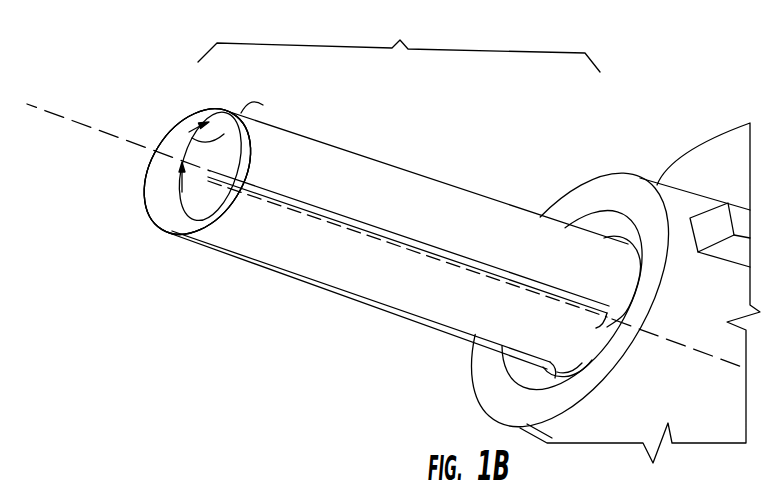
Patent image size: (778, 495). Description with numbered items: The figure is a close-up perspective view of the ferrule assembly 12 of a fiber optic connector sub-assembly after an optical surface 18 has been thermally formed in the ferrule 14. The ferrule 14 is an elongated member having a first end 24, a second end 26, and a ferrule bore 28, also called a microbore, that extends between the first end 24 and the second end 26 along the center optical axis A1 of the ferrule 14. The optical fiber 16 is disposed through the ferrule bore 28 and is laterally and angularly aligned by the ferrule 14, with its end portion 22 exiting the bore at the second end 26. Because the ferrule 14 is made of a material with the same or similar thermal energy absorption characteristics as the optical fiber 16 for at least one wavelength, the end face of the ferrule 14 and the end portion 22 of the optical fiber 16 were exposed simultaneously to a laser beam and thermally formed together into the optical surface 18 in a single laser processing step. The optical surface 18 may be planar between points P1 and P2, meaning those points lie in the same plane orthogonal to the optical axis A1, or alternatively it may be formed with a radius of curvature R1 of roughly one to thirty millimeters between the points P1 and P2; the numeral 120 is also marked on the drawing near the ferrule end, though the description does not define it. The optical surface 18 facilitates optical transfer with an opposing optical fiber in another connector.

The ferrule assembly 12 is at (399, 44).
The ferrule 14 is at (377, 173).
The optical fiber 16 is at (367, 230).
The optical surface 18 is at (165, 186).
The end portion 22 is at (173, 127).
The first end 24 is at (596, 370).
The second end 26 is at (126, 181).
The ferrule bore 28 is at (416, 236).
The ring bottom edge 120 is at (180, 250).
The optical axis A1 is at (386, 220).
The point P1 is at (191, 179).
The point P2 is at (206, 105).
The radius R1 is at (262, 110).